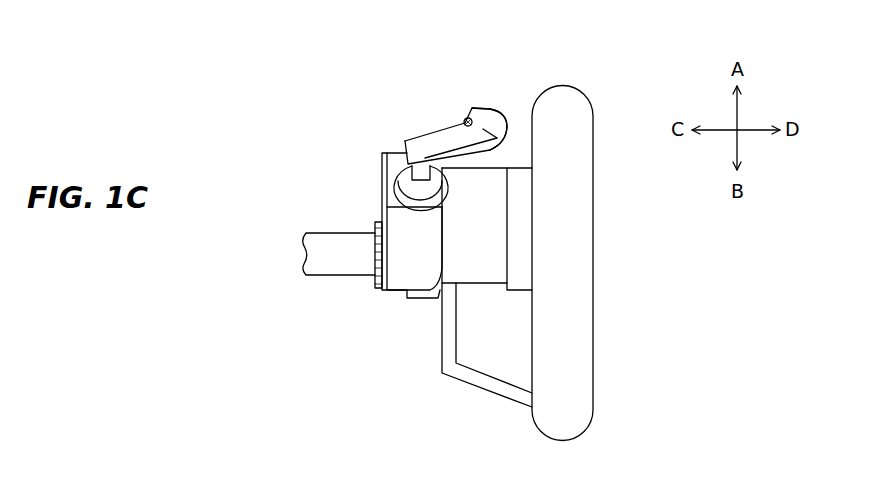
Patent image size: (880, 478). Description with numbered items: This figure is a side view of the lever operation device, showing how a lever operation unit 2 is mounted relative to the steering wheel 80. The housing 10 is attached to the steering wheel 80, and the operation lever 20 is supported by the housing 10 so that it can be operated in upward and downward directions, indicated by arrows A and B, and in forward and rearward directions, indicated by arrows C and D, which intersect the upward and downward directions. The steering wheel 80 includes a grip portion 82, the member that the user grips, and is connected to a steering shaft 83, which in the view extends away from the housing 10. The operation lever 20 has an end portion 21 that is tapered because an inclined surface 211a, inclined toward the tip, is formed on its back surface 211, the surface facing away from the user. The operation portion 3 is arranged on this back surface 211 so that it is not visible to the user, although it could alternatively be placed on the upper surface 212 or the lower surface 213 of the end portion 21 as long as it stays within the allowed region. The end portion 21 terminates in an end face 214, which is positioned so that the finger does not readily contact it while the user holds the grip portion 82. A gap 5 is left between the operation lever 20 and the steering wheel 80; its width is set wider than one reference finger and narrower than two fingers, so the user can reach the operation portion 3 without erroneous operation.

The lever operation unit 2 is at (529, 108).
The operation portion 3 is at (464, 120).
The gap 5 is at (520, 127).
The housing 10 is at (401, 278).
The operation lever 20 is at (407, 143).
The end portion 21 is at (475, 111).
The steering wheel 80 is at (593, 124).
The grip portion 82 is at (573, 264).
The steering shaft 83 is at (340, 256).
The back surface 211 is at (460, 128).
The inclined surface 211a is at (483, 129).
The upper surface 212 is at (480, 110).
The lower surface 213 is at (497, 146).
The end face 214 is at (503, 127).